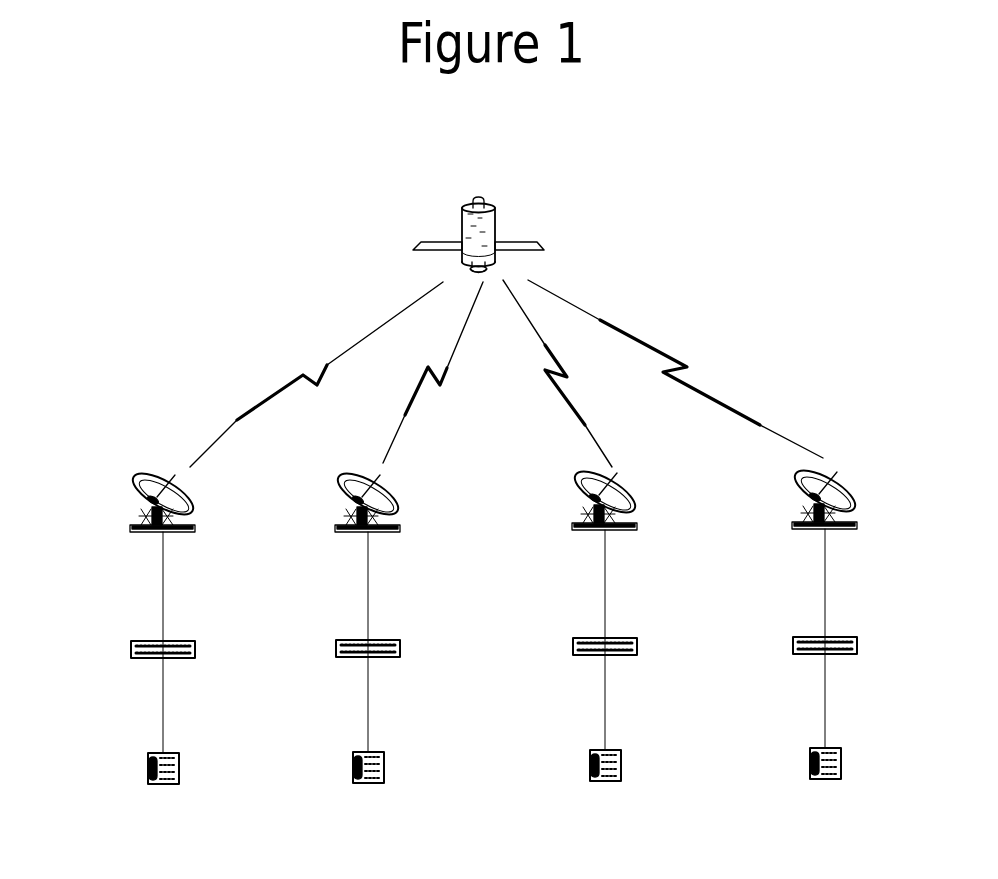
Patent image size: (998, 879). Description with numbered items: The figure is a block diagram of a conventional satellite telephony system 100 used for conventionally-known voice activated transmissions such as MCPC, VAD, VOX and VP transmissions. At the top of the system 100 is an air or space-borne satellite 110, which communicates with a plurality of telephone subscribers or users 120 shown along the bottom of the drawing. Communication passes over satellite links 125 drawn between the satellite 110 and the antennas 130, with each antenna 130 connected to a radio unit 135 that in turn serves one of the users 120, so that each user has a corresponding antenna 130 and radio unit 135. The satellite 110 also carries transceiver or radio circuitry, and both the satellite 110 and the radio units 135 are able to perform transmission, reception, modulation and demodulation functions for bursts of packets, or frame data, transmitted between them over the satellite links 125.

The satellite telephony system 100 is at (135, 218).
The satellite 110 is at (545, 249).
The telephone subscribers or users 120 is at (843, 766).
The satellite links 125 is at (303, 375).
The antennas 130 is at (855, 495).
The radio units 135 is at (130, 650).